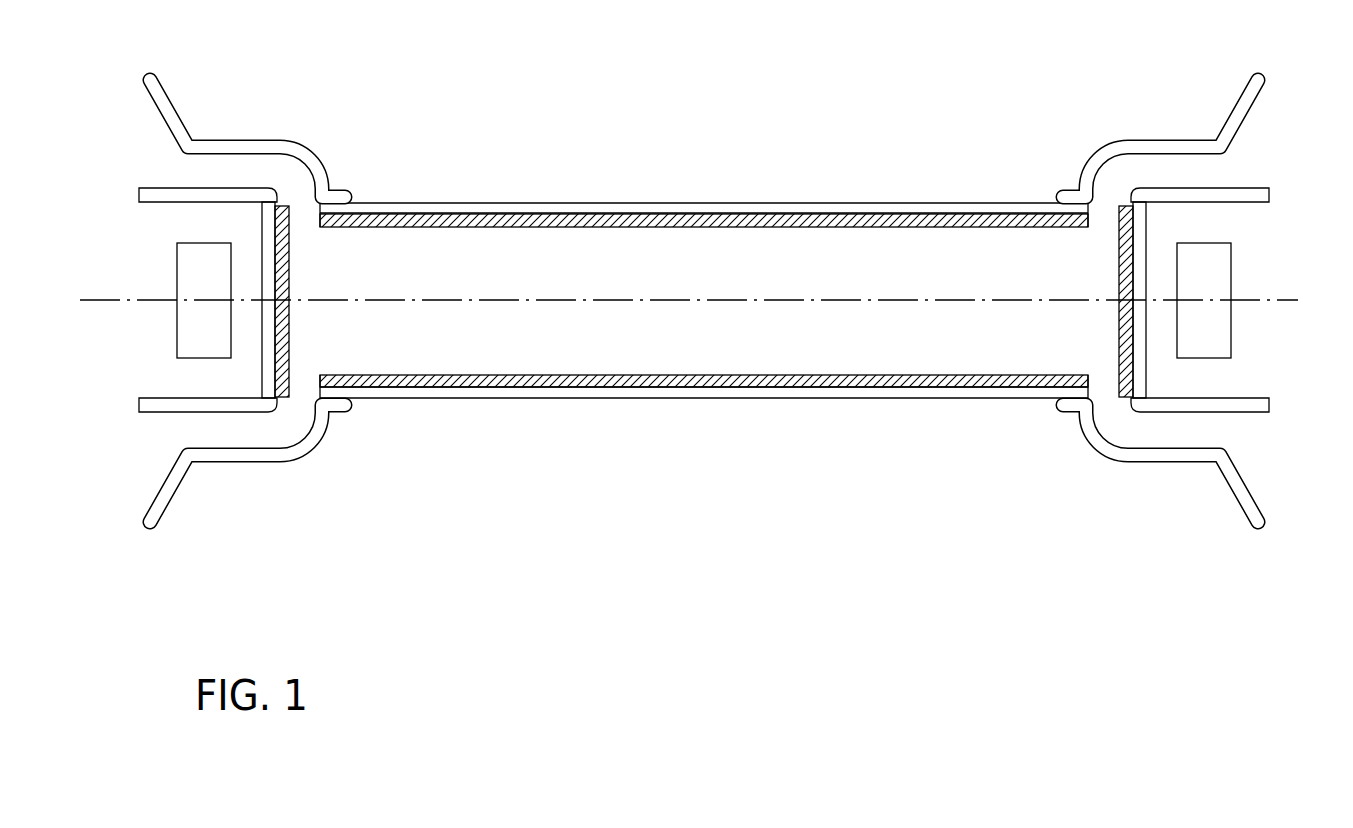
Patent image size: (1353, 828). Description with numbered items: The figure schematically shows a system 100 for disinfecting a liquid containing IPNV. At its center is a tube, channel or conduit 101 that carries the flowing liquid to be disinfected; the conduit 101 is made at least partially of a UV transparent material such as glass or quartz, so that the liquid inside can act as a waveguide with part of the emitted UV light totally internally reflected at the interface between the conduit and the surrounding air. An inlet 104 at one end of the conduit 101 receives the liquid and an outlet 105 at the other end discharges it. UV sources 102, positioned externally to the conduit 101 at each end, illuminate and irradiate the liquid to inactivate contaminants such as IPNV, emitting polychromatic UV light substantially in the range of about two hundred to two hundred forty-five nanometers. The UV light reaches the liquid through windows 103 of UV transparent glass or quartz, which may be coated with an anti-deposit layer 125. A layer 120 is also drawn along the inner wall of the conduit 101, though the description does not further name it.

The system 100 is at (718, 546).
The conduit 101 is at (578, 203).
The UV sources 102 is at (177, 248).
The windows 103 is at (275, 373).
The inlet 104 is at (225, 172).
The outlet 105 is at (1165, 172).
The coating layer 120 is at (853, 222).
The anti-deposit layer 125 is at (297, 380).